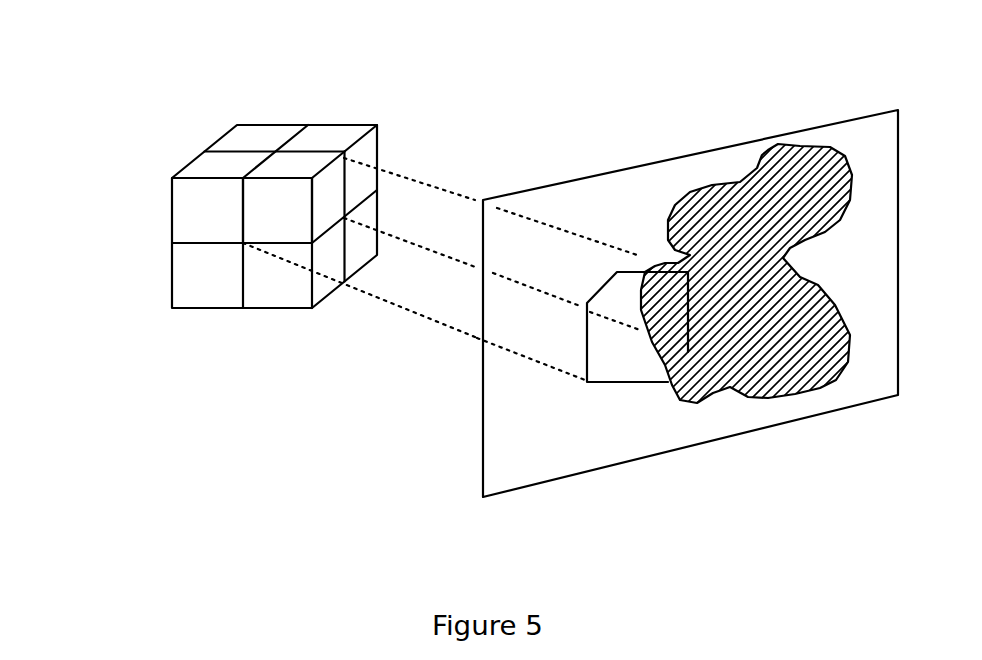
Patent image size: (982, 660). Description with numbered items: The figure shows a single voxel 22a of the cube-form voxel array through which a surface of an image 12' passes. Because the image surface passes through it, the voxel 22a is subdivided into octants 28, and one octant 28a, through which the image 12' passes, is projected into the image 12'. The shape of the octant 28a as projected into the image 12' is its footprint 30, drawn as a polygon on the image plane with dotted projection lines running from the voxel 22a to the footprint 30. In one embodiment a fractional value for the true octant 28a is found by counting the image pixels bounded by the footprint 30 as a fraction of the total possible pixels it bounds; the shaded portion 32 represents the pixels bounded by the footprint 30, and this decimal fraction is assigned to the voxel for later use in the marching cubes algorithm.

The voxel 22a is at (423, 103).
The octants 28 is at (187, 213).
The octant 28a is at (275, 205).
The footprint 30 is at (587, 372).
The shaded portion 32 is at (670, 303).
The image 12' is at (676, 326).